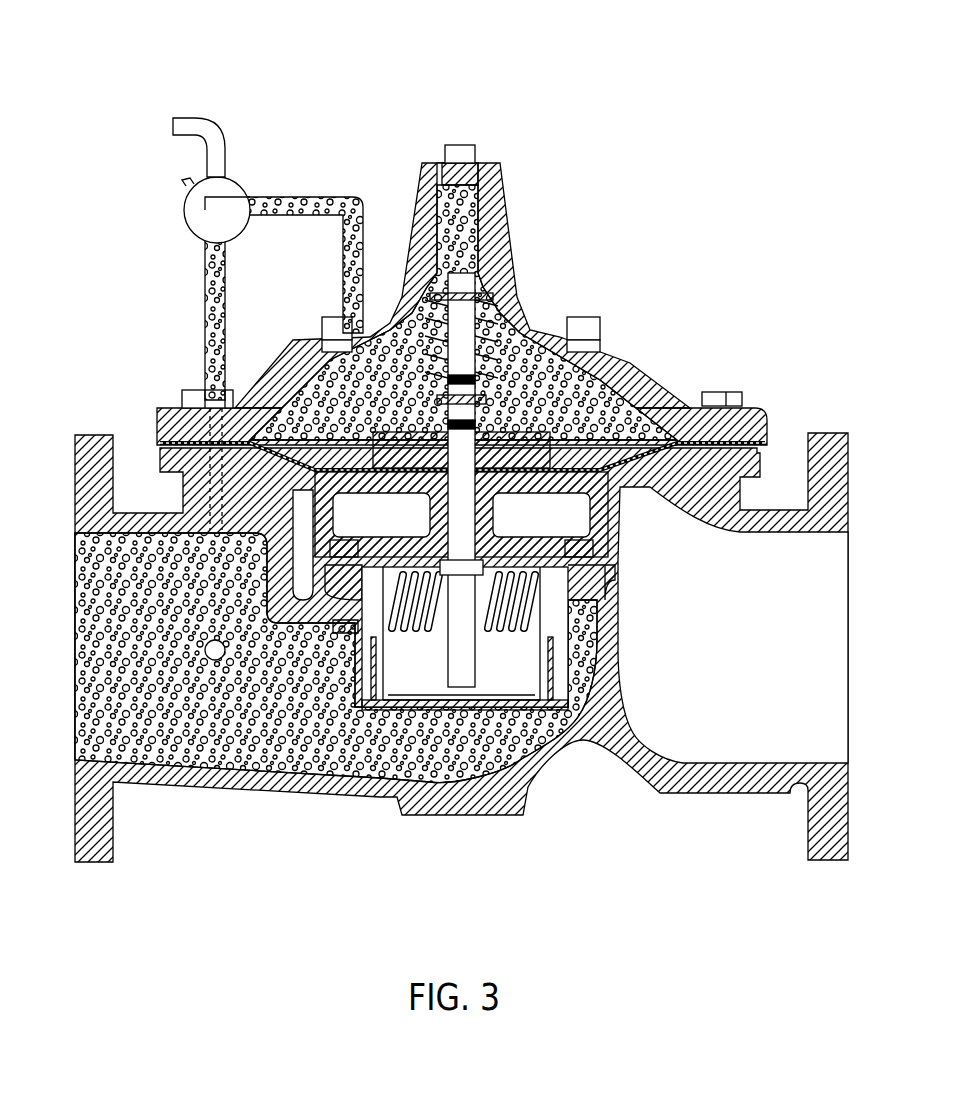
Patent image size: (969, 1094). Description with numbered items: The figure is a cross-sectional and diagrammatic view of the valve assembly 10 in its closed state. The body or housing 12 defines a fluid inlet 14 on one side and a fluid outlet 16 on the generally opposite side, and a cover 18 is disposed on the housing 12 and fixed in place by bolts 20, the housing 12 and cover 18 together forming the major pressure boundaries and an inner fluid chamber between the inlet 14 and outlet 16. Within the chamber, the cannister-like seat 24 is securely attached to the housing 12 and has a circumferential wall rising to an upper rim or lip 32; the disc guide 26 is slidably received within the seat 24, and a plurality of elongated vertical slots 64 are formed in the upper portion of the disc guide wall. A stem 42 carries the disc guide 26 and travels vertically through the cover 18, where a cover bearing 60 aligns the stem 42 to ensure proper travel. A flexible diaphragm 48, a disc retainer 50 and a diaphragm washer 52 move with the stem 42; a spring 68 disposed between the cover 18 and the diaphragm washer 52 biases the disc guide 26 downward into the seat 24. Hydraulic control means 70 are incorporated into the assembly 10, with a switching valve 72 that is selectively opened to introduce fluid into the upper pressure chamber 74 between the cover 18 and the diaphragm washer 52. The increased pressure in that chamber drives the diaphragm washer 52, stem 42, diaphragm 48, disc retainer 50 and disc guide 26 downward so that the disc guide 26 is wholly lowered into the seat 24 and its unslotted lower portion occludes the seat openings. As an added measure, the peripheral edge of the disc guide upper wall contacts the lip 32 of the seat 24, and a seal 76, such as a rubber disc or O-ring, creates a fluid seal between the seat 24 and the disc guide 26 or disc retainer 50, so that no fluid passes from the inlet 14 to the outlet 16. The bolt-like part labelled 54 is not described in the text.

The valve assembly 10 is at (118, 85).
The body or housing 12 is at (707, 797).
The fluid inlet 14 is at (75, 630).
The fluid outlet 16 is at (842, 660).
The cover 18 is at (505, 213).
The bolts 20 is at (713, 392).
The seat 24 is at (353, 723).
The disc guide 26 is at (451, 701).
The upper rim or lip 32 is at (603, 577).
The stem 42 is at (478, 355).
The flexible diaphragm 48 is at (478, 508).
The disc retainer 50 is at (608, 520).
The diaphragm washer 52 is at (540, 462).
The bolt 54 is at (445, 495).
The cover bearing 60 is at (468, 337).
The elongated vertical slots 64 is at (510, 673).
The spring 68 is at (470, 395).
The hydraulic control means 70 is at (258, 165).
The switching valve 72 is at (195, 218).
The upper pressure chamber 74 is at (369, 231).
The seal 76 is at (600, 548).